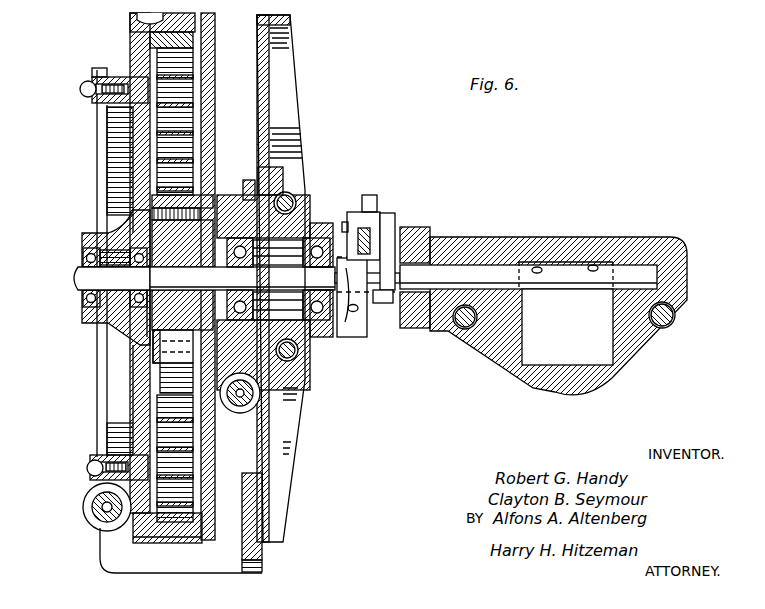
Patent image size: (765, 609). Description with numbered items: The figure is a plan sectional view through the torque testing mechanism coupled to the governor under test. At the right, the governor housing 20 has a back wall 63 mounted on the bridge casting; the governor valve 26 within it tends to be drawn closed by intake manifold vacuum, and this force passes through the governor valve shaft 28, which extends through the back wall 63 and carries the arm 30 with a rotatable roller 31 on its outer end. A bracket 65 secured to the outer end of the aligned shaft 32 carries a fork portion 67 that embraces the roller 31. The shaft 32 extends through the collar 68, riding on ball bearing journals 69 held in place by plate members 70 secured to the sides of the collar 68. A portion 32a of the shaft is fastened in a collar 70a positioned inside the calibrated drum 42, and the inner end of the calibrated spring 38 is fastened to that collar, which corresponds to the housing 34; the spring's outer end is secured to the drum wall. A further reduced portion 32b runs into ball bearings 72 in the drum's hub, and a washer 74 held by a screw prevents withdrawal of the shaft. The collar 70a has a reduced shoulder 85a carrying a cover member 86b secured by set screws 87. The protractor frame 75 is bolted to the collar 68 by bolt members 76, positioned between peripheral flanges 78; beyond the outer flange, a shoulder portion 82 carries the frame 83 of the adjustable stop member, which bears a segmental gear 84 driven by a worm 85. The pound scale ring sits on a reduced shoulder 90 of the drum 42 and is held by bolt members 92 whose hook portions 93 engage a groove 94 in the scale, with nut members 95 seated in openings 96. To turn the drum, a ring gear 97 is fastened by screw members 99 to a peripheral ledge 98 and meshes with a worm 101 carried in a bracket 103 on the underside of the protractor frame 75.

The governor housing 20 is at (485, 352).
The governor valve 26 is at (558, 353).
The governor valve shaft 28 is at (480, 265).
The arm 30 is at (395, 225).
The roller 31 is at (370, 195).
The shaft 32 is at (353, 273).
The shaft portion 32a is at (242, 274).
The reduced shaft portion 32b is at (112, 275).
The housing 34 is at (167, 402).
The calibrated spring 38 is at (167, 423).
The calibrated drum 42 is at (130, 47).
The back wall 63 is at (417, 328).
The bracket 65 is at (350, 335).
The fork portion 67 is at (380, 212).
The collar 68 is at (309, 205).
The ball bearing journals 69 is at (300, 290).
The plate members 70 is at (243, 195).
The collar 70a is at (157, 318).
The ball bearings 72 is at (128, 303).
The washer 74 is at (82, 263).
The protractor frame 75 is at (275, 465).
The bolt members 76 is at (305, 186).
The peripheral flanges 78 is at (313, 353).
The shoulder portion 82 is at (262, 182).
The frame 83 is at (258, 181).
The segmental gear 84 is at (240, 413).
The worm 85 is at (255, 412).
The reduced shoulder 85a is at (215, 167).
The cover member 86b is at (208, 84).
The set screws 87 is at (160, 212).
The reduced shoulder 90 is at (160, 30).
The bolt members 92 is at (152, 540).
The hook portions 93 is at (200, 543).
The groove 94 is at (213, 33).
The nut members 95 is at (140, 530).
The openings 96 is at (143, 542).
The ring gear 97 is at (97, 112).
The peripheral ledge 98 is at (107, 135).
The screw members 99 is at (80, 88).
The worm 101 is at (92, 505).
The bracket 103 is at (250, 572).